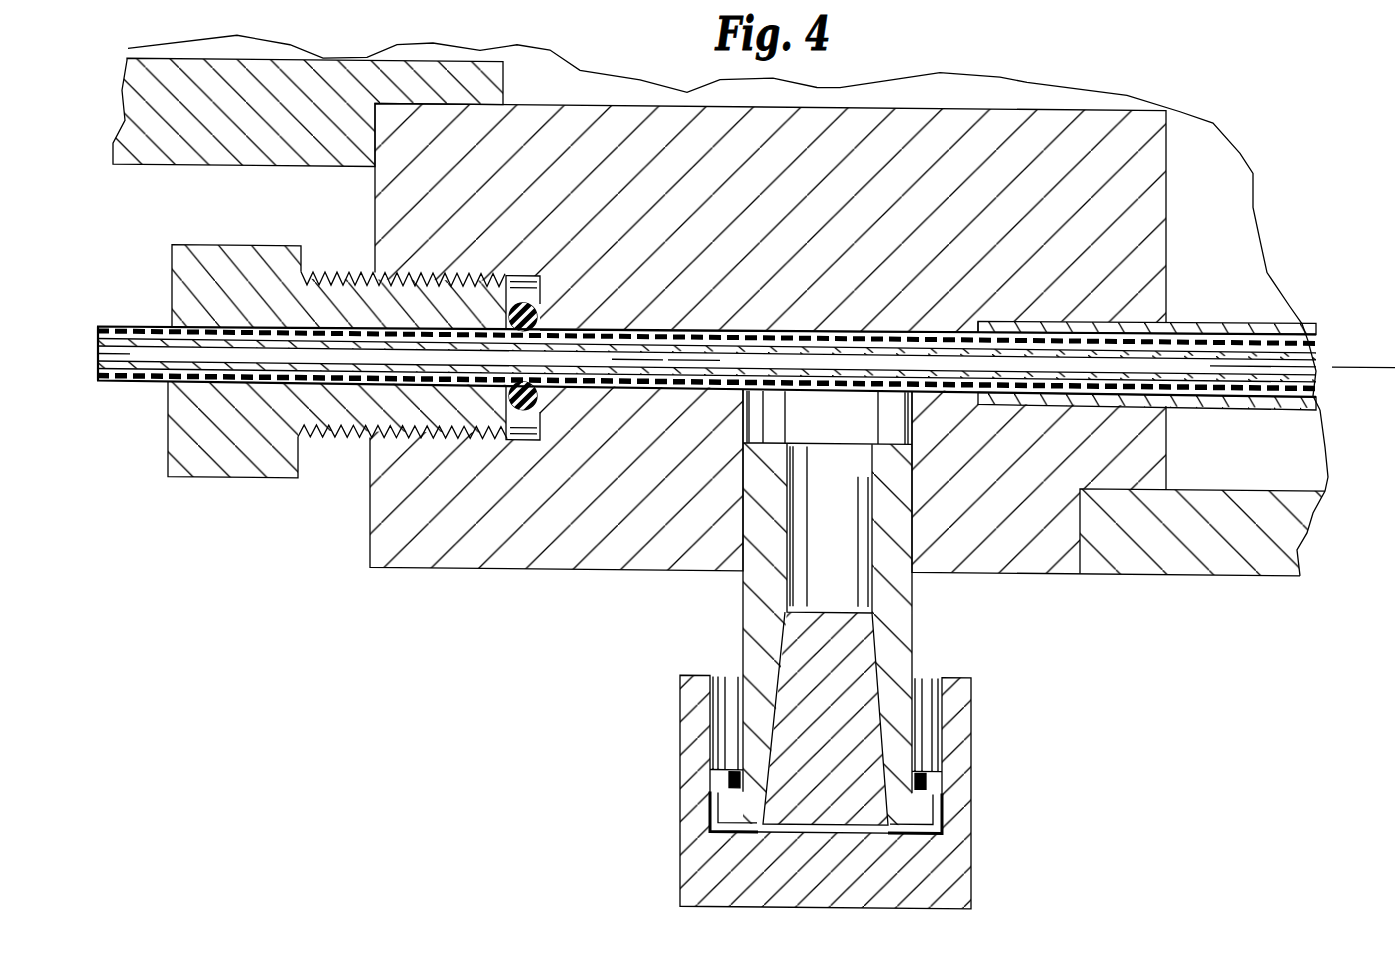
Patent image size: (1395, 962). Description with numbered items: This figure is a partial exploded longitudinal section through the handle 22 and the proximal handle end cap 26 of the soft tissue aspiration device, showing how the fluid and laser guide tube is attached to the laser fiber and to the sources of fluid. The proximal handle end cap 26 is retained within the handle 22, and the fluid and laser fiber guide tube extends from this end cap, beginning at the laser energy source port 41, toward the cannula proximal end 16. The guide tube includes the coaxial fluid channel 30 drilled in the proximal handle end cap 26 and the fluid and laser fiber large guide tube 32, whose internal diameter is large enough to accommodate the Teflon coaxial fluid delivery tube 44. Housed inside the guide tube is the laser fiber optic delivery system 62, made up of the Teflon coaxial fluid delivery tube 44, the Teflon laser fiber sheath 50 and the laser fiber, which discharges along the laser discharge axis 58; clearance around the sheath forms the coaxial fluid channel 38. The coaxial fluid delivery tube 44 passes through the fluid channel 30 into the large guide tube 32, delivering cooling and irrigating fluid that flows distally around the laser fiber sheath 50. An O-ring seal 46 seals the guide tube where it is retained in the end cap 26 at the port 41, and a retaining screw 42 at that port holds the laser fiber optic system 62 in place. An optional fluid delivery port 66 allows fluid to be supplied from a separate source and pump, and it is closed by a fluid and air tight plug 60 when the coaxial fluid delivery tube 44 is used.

The cannula proximal end 16 is at (285, 633).
The handle 22 is at (1197, 565).
The proximal handle end cap 26 is at (450, 565).
The coaxial fluid channel 30 is at (896, 297).
The fluid and laser fiber large guide tube 32 is at (1180, 316).
The coaxial fluid channel 38 is at (1210, 316).
The laser energy source port 41 is at (170, 326).
The retaining screw 42 is at (214, 477).
The Teflon coaxial fluid delivery tube 44 is at (1238, 316).
The O-ring seal 46 is at (533, 406).
The Teflon laser fiber sheath 50 is at (1272, 316).
The laser discharge axis 58 is at (1342, 356).
The fluid and air tight plug 60 is at (971, 810).
The laser fiber optic delivery system 62 is at (123, 382).
The fluid delivery port 66 is at (913, 620).